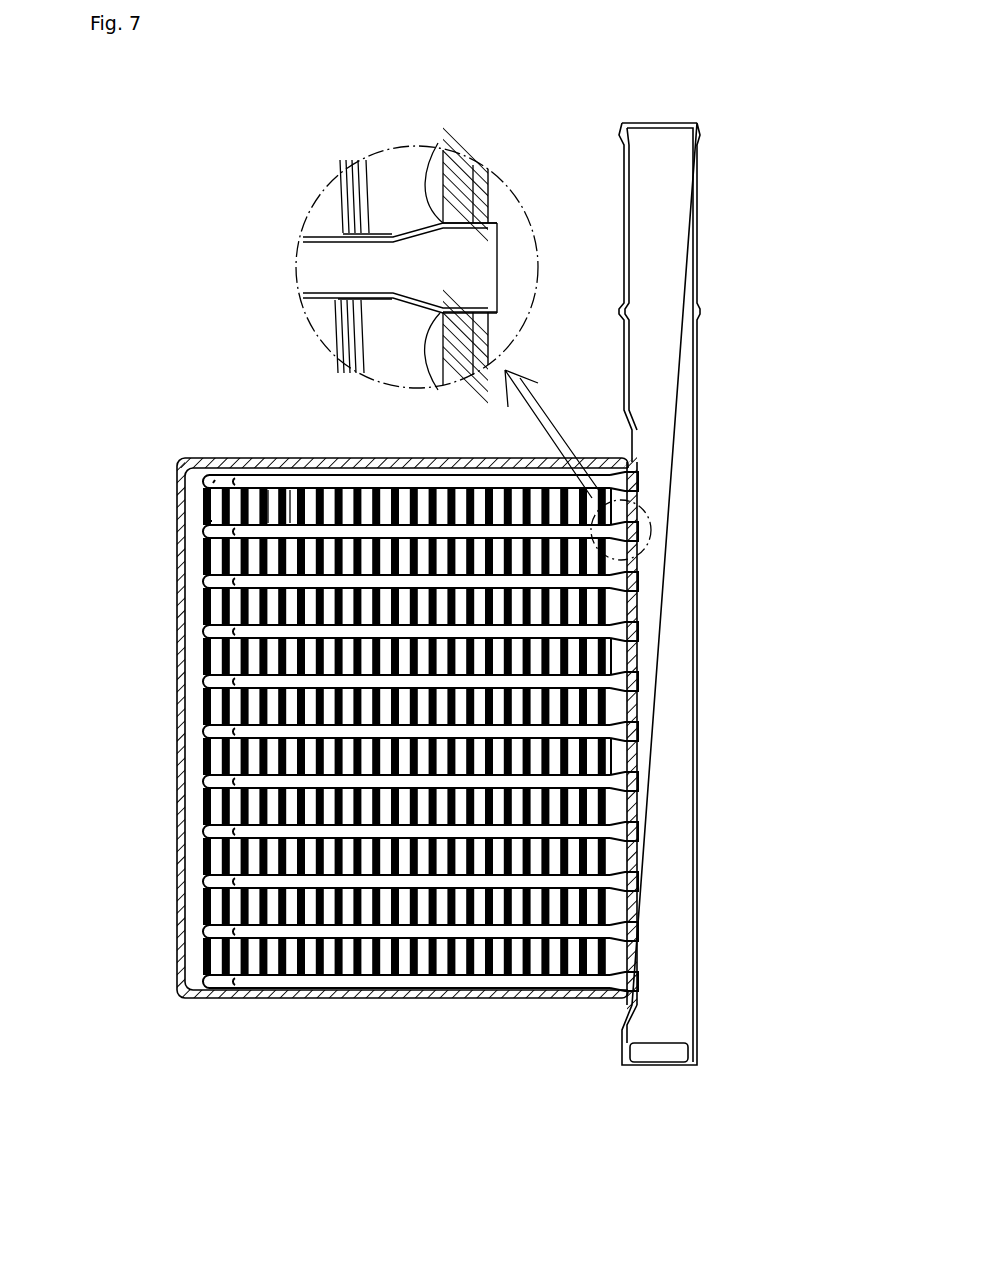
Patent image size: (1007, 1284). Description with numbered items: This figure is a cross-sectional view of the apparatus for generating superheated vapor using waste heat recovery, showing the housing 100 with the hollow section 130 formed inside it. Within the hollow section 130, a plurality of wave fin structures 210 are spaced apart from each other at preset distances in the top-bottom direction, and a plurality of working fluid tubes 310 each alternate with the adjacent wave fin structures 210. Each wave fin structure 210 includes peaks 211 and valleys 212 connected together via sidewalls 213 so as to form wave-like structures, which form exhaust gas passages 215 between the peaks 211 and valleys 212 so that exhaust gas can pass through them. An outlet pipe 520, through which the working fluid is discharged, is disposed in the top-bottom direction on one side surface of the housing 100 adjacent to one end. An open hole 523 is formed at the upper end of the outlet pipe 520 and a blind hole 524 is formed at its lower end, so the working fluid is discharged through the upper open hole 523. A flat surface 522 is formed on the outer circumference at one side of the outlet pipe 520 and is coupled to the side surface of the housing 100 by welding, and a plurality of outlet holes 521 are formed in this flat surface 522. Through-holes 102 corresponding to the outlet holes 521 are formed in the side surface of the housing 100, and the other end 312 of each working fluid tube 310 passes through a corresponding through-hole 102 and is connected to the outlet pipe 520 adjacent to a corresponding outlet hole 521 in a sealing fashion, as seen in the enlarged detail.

The housing 100 is at (160, 683).
The through-holes 102 is at (437, 160).
The hollow section 130 is at (190, 550).
The wave fin structures 210 is at (312, 205).
The peaks 211 is at (213, 480).
The valleys 212 is at (202, 521).
The sidewalls 213 is at (200, 487).
The exhaust gas passages 215 is at (270, 497).
The working fluid tubes 310 is at (284, 267).
The other end of working fluid tube 312 is at (483, 268).
The outlet pipe 520 is at (698, 593).
The outlet holes 521 is at (500, 229).
The flat surface 522 is at (462, 183).
The open hole 523 is at (656, 138).
The blind hole 524 is at (652, 1062).